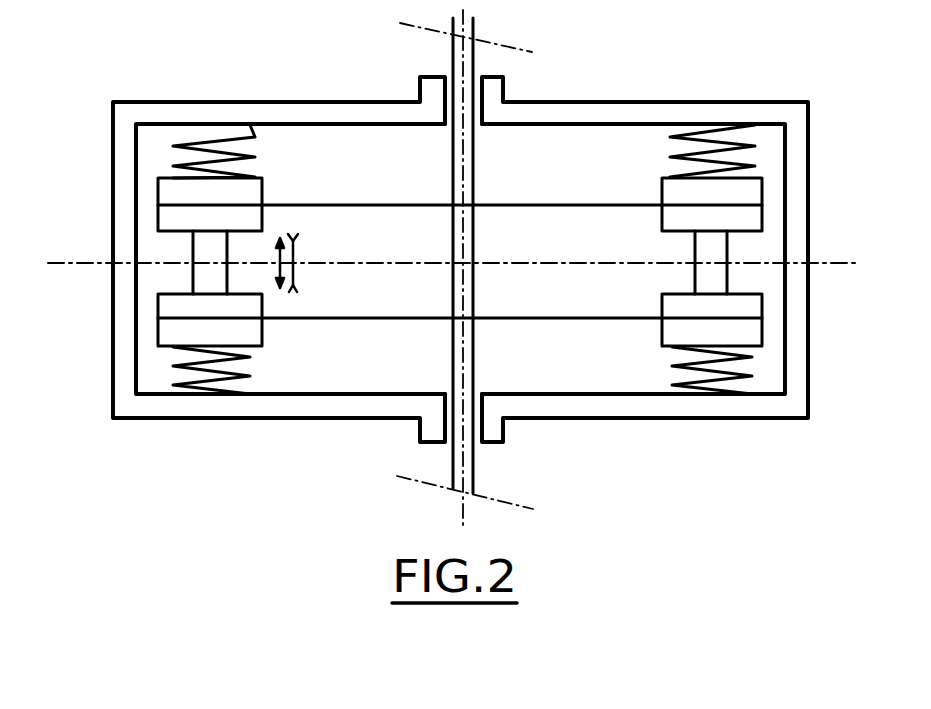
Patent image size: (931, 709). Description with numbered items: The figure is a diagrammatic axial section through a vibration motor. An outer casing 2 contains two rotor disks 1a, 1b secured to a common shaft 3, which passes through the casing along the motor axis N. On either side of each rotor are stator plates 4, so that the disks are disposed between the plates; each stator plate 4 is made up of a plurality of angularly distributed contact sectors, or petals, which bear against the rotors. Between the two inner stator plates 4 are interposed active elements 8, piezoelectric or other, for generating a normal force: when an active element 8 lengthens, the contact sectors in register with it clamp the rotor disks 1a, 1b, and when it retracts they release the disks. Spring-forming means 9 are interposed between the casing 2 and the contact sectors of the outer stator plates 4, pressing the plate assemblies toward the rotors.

The rotor 1a is at (530, 205).
The rotor 1b is at (520, 318).
The outer casing 2 is at (112, 362).
The shaft 3 is at (473, 152).
The stator plate 4 is at (253, 193).
The active element for generating a normal force 8 is at (193, 268).
The spring-forming means 9 is at (185, 148).
The neutral axis N is at (840, 262).